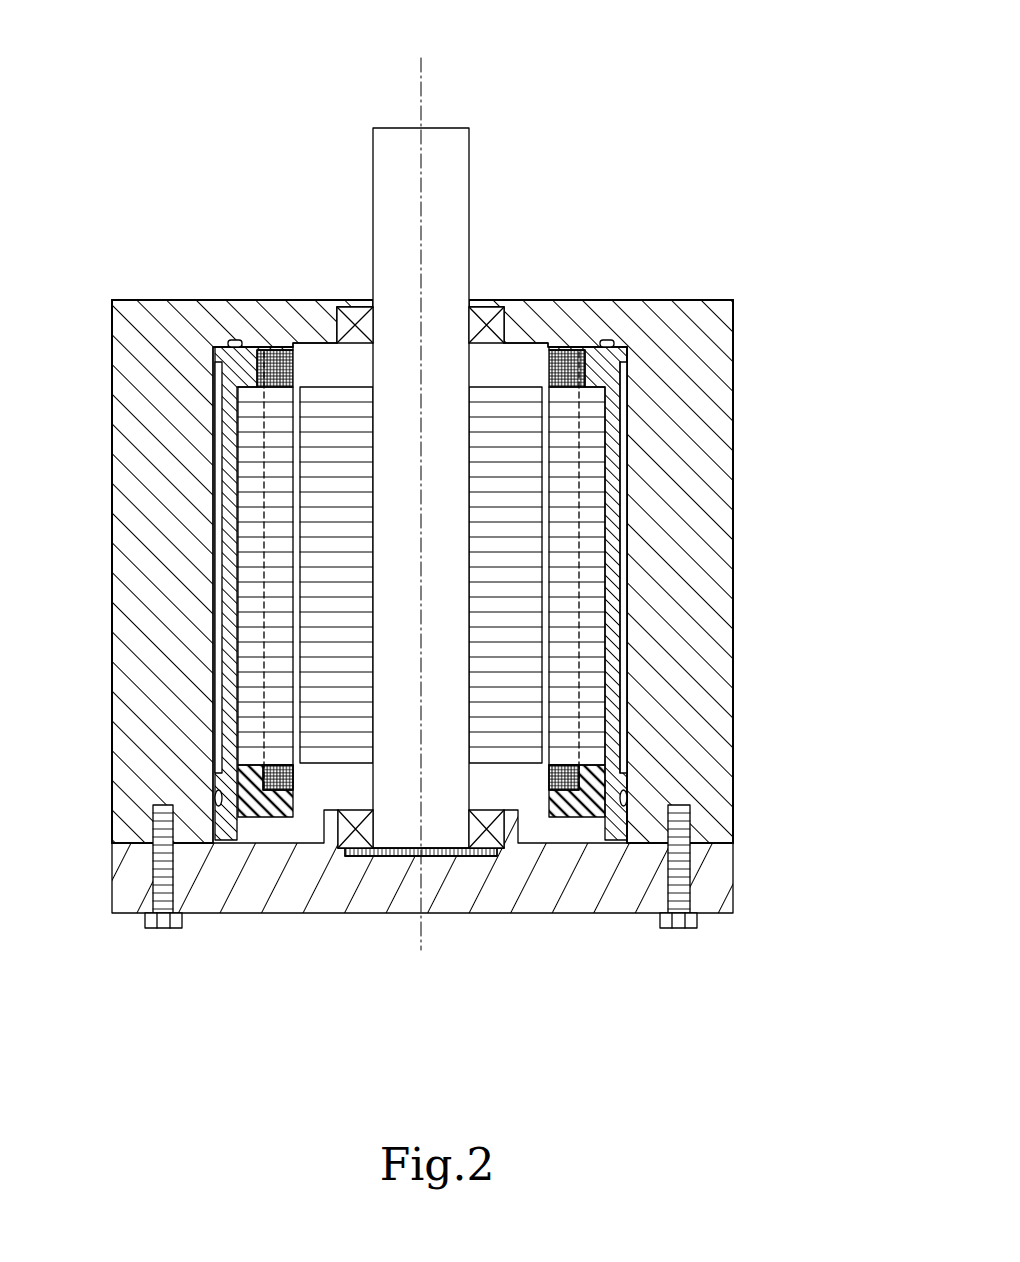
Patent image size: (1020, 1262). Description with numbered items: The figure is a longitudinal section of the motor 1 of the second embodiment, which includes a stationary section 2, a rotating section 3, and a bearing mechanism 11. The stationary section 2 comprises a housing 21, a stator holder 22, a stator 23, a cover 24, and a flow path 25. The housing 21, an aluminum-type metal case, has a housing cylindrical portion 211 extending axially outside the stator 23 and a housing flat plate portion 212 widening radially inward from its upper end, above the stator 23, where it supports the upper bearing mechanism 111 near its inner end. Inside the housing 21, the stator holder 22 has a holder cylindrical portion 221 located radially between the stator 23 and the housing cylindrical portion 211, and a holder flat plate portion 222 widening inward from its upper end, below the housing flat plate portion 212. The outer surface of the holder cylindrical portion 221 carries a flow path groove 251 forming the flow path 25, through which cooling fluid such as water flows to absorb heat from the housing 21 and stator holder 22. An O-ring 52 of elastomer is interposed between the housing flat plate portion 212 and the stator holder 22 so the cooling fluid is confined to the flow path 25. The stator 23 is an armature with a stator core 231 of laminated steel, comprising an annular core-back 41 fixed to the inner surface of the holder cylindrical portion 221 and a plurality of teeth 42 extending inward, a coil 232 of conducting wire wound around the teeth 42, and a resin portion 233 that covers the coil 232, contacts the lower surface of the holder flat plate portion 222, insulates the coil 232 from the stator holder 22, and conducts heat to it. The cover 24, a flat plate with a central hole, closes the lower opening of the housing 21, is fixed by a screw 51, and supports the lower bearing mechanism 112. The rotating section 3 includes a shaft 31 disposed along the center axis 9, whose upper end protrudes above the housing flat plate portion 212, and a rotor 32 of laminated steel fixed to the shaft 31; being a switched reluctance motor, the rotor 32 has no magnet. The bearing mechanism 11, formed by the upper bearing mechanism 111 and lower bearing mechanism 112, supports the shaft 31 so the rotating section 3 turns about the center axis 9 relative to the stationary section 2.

The motor 1 is at (641, 140).
The stationary section 2 is at (650, 953).
The rotating section 3 is at (416, 527).
The center axis 9 is at (423, 97).
The bearing mechanism 11 is at (473, 865).
The upper bearing mechanism 111 is at (486, 318).
The lower bearing mechanism 112 is at (490, 840).
The housing 21 is at (745, 217).
The housing cylindrical portion 211 is at (714, 390).
The housing flat plate portion 212 is at (600, 298).
The stator holder 22 is at (398, 510).
The holder cylindrical portion 221 is at (222, 425).
The holder flat plate portion 222 is at (277, 345).
The stator 23 is at (414, 682).
The stator core 231 is at (248, 730).
The coil 232 is at (267, 817).
The resin portion 233 is at (286, 817).
The cover 24 is at (137, 900).
The flow path 25 is at (630, 598).
The flow path groove 251 is at (620, 643).
The shaft 31 is at (398, 155).
The rotor 32 is at (352, 408).
The core-back 41 is at (592, 727).
The teeth 42 is at (563, 727).
The screw 51 is at (686, 920).
The O-ring 52 is at (607, 345).